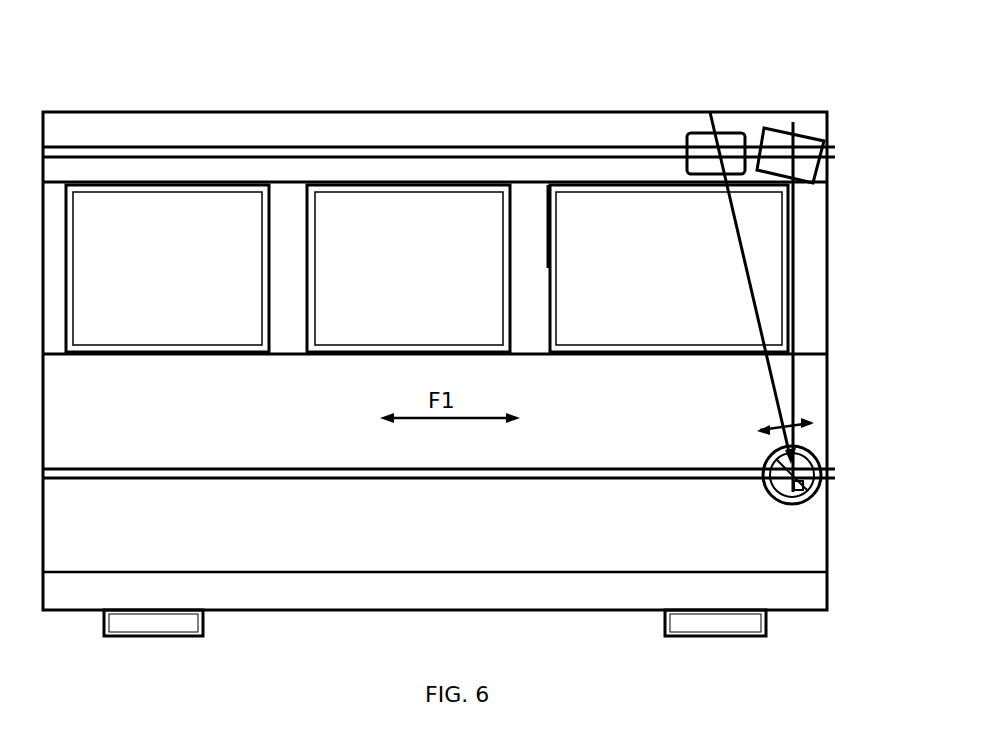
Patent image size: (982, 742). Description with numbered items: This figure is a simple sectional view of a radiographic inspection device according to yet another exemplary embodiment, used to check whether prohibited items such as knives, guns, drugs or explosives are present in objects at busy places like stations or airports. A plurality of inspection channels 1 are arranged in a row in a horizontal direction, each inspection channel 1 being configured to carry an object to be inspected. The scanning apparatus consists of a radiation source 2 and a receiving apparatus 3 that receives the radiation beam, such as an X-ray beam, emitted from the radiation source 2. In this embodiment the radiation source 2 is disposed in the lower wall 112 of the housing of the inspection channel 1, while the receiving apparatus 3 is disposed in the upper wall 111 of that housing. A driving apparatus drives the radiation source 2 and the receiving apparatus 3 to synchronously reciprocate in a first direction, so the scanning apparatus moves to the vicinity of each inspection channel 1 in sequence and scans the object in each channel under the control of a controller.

The inspection channel 1 is at (403, 285).
The upper wall 111 is at (267, 133).
The lower wall 112 is at (248, 497).
The radiation source 2 is at (806, 492).
The receiving apparatus 3 is at (700, 130).